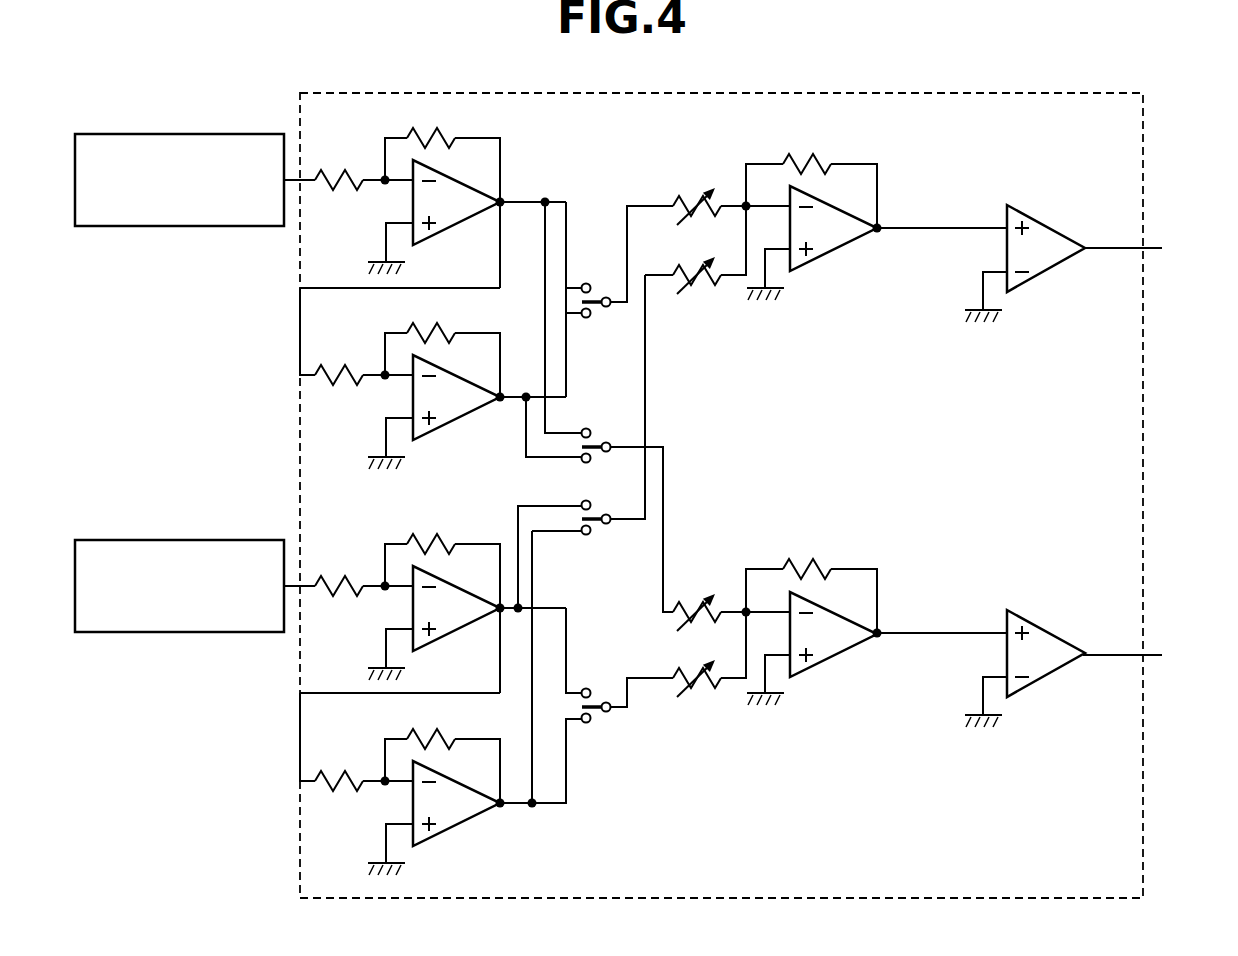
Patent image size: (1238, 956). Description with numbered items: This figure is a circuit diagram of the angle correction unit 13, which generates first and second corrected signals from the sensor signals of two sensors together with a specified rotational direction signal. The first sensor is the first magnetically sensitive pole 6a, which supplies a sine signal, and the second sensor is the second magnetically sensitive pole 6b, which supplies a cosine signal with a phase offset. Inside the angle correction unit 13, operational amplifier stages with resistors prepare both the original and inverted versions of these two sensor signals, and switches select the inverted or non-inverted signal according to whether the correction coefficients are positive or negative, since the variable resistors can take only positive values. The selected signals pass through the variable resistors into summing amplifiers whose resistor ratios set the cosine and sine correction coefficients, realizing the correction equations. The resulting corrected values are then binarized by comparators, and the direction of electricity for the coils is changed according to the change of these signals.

The first magnetically sensitive pole 6a is at (200, 134).
The second magnetically sensitive pole 6b is at (200, 540).
The angle correction unit 13 is at (952, 93).